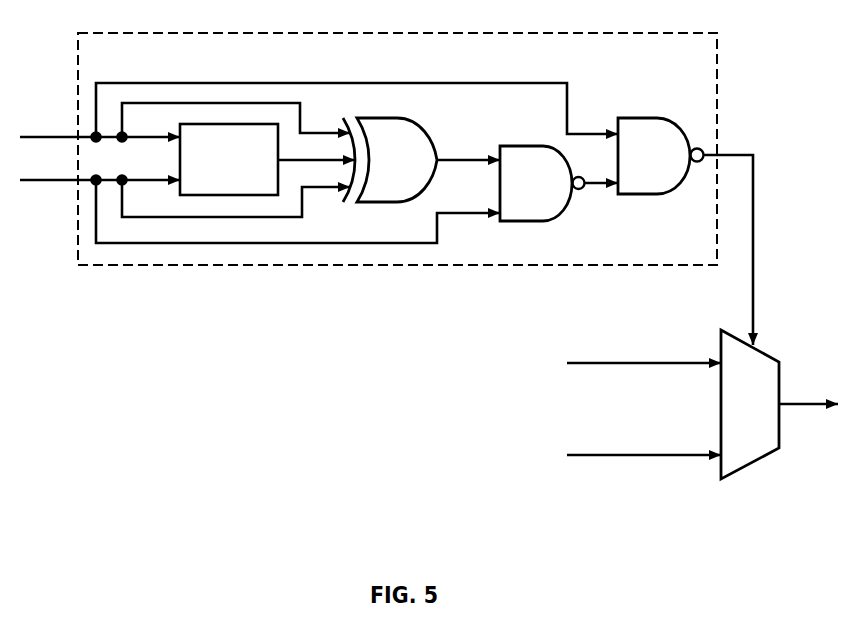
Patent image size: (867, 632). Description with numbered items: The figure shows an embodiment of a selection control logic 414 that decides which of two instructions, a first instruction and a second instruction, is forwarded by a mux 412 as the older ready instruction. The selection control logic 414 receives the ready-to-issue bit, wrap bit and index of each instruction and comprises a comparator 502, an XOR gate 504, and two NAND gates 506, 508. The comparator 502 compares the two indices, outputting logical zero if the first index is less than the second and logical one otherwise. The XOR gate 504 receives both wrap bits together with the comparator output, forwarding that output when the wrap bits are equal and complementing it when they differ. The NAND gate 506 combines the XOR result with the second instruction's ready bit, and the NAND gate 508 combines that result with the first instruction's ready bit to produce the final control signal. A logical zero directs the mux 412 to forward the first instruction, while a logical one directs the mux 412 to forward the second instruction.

The selection control logic 414 is at (365, 65).
The comparator 502 is at (245, 183).
The XOR gate 504 is at (412, 171).
The NAND gate 506 is at (547, 195).
The NAND gate 508 is at (670, 163).
The mux 412 is at (765, 416).